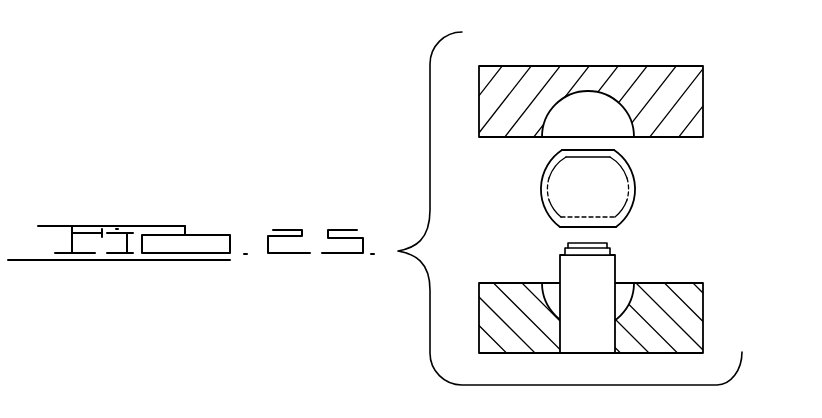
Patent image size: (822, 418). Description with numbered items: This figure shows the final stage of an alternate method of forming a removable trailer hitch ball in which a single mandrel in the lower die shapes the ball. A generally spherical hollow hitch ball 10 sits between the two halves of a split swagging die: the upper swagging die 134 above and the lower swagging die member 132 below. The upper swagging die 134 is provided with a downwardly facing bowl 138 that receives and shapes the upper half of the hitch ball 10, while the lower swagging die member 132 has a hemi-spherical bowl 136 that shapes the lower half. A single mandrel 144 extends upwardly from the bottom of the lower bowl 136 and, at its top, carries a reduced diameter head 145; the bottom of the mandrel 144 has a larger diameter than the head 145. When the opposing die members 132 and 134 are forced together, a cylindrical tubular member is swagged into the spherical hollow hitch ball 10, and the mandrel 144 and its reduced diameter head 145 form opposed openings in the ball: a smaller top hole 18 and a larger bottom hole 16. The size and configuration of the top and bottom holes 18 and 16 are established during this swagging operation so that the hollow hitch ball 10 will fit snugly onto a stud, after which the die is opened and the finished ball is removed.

The hollow hitch ball 10 is at (637, 193).
The bottom hole 16 is at (612, 226).
The top hole 18 is at (606, 147).
The lower swagging die member 132 is at (693, 312).
The upper swagging die 134 is at (683, 83).
The hemi-spherical bowl 136 is at (543, 296).
The downwardly facing bowl 138 is at (543, 126).
The mandrel 144 is at (600, 278).
The reduced diameter head 145 is at (567, 246).